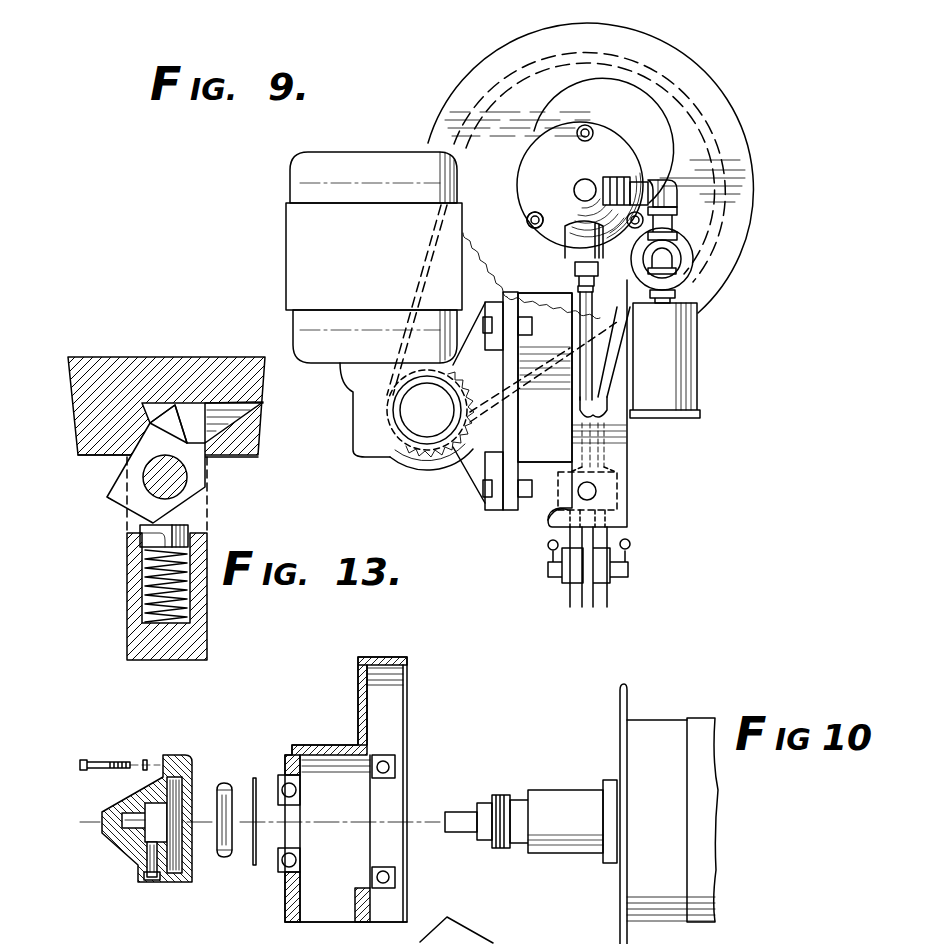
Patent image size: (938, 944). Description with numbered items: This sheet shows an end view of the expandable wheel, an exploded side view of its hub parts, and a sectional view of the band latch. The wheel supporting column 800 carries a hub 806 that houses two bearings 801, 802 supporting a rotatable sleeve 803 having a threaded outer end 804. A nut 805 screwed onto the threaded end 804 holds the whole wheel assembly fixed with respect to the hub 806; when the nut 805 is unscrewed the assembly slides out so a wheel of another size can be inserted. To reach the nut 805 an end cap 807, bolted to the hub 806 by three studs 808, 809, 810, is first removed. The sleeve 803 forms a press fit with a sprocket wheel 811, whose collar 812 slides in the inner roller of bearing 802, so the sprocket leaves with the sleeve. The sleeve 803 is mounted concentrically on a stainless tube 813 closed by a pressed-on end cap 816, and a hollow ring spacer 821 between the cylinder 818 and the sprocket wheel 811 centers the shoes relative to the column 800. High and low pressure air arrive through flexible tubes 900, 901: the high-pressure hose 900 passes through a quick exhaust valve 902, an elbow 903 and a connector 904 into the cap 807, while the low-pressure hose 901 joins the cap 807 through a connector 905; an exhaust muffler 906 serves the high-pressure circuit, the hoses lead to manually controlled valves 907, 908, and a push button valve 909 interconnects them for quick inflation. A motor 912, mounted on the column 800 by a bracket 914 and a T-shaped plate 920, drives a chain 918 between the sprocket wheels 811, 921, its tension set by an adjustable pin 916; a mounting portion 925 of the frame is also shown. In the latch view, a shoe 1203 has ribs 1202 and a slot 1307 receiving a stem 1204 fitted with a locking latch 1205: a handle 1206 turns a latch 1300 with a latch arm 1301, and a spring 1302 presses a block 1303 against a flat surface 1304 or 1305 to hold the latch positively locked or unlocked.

In FIG. 9, the wheel supporting column 800 is at (627, 522).
In FIG. 10, the wheel supporting column 800 is at (361, 920).
In FIG. 10, the bearing 801 is at (302, 786).
In FIG. 10, the bearing 802 is at (395, 768).
In FIG. 10, the sleeve 803 is at (545, 850).
In FIG. 10, the threaded outer end 804 is at (502, 795).
In FIG. 10, the nut 805 is at (225, 860).
In FIG. 9, the hub 806 is at (648, 148).
In FIG. 10, the hub 806 is at (305, 746).
In FIG. 9, the end cap 807 is at (556, 137).
In FIG. 10, the end cap 807 is at (135, 868).
In FIG. 9, the stud 808 is at (597, 128).
In FIG. 10, the stud 808 is at (100, 762).
In FIG. 9, the stud 809 is at (690, 225).
In FIG. 9, the stud 810 is at (526, 222).
In FIG. 9, the sprocket wheel 811 is at (445, 292).
In FIG. 10, the sprocket wheel 811 is at (620, 700).
In FIG. 10, the collar or hub of the sprocket wheel 812 is at (614, 780).
In FIG. 10, the tube 813 is at (460, 833).
In FIG. 10, the end cap 816 is at (482, 803).
In FIG. 10, the cylinder 818 is at (705, 882).
In FIG. 10, the hollow ring metallic spacer 821 is at (665, 722).
In FIG. 9, the flexible tube (high-pressure hose) 900 is at (605, 412).
In FIG. 9, the flexible tube (low-pressure hose) 901 is at (582, 398).
In FIG. 9, the quick exhaust valve 902 is at (698, 270).
In FIG. 9, the elbow 903 is at (660, 195).
In FIG. 9, the connector 904 is at (656, 180).
In FIG. 9, the connector 905 is at (575, 278).
In FIG. 9, the exhaust muffler 906 is at (698, 370).
In FIG. 9, the manually controlled valve 907 is at (614, 583).
In FIG. 9, the manually controlled valve 908 is at (565, 583).
In FIG. 9, the push button valve 909 is at (614, 475).
In FIG. 9, the motor 912 is at (300, 187).
In FIG. 9, the bracket 914 is at (470, 482).
In FIG. 9, the adjustable and rotatable pin 916 is at (400, 411).
In FIG. 9, the chain 918 is at (735, 143).
In FIG. 9, the T-shaped plate 920 is at (522, 424).
In FIG. 9, the sprocket wheel 921 is at (385, 396).
In FIG. 9, the mount 925 is at (555, 520).
In FIG. 13, the rib 1202 is at (104, 357).
In FIG. 10, the shoe 1203 is at (500, 936).
In FIG. 13, the stem 1204 is at (205, 638).
In FIG. 13, the locking latch 1205 is at (279, 489).
In FIG. 13, the handle 1206 is at (180, 490).
In FIG. 13, the latch 1300 is at (237, 474).
In FIG. 13, the latch arm 1301 is at (245, 412).
In FIG. 13, the spring 1302 is at (150, 597).
In FIG. 13, the block 1303 is at (190, 538).
In FIG. 13, the flat surface 1304 is at (160, 532).
In FIG. 13, the flat surface 1305 is at (119, 503).
In FIG. 13, the slot 1307 is at (178, 403).